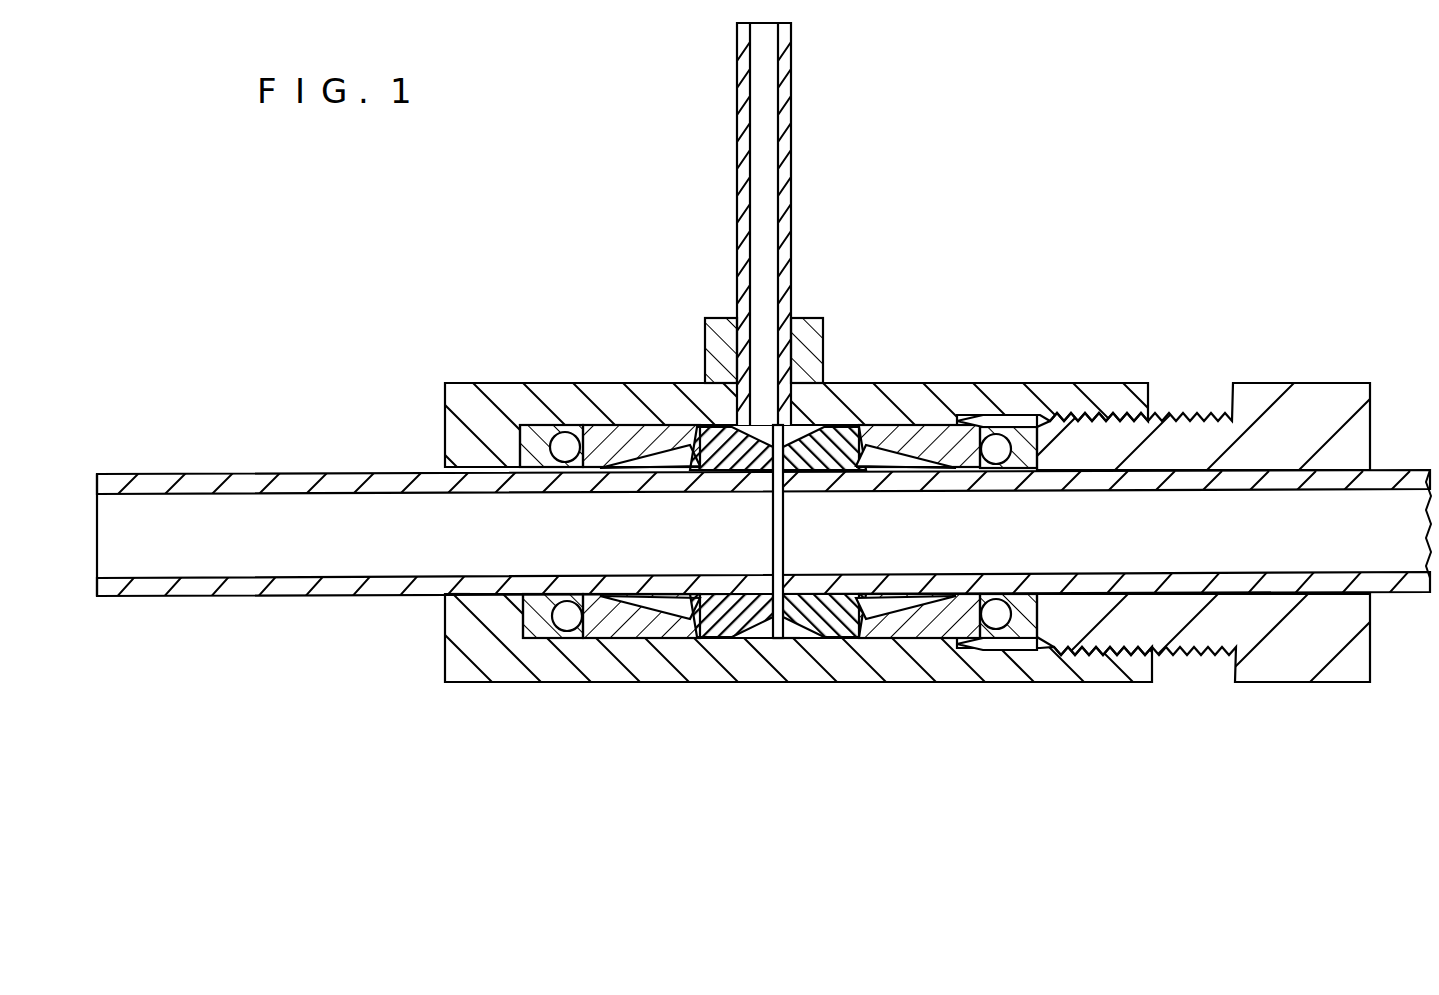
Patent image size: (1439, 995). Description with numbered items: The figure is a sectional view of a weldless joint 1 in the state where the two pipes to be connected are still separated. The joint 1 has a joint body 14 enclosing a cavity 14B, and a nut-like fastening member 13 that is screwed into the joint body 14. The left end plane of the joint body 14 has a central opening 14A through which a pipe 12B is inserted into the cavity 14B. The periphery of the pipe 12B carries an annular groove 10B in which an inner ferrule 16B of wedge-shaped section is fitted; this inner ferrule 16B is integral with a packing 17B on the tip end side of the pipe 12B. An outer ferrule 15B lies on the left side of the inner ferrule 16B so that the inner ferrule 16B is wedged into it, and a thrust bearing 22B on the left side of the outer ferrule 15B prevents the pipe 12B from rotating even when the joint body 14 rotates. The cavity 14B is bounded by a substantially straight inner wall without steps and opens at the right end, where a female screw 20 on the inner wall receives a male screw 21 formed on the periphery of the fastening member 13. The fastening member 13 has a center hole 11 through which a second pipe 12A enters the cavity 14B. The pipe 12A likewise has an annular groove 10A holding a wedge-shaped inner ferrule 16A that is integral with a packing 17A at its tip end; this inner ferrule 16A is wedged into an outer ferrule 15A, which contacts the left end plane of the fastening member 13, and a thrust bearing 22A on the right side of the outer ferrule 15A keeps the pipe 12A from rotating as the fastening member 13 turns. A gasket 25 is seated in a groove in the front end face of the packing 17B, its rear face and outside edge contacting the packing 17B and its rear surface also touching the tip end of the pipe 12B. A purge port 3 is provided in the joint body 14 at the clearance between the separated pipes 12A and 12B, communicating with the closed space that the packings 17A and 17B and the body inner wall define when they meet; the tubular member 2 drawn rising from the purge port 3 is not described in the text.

The weldless joint 1 is at (638, 312).
The lead tube 2 is at (792, 203).
The purge port 3 is at (800, 355).
The annular groove 10A is at (930, 458).
The annular groove 10B is at (618, 465).
The center hole 11 is at (753, 627).
The pipe 12A is at (1292, 587).
The pipe 12B is at (367, 585).
The fastening member 13 is at (1229, 502).
The joint body 14 is at (806, 603).
The opening 14A is at (457, 597).
The cavity 14B is at (793, 640).
The outer ferrule 15A is at (977, 640).
The outer ferrule 15B is at (607, 636).
The inner ferrule 16A is at (933, 603).
The inner ferrule 16B is at (657, 636).
The packing 17A is at (830, 636).
The packing 17B is at (747, 636).
The female screw 20 is at (1022, 416).
The male screw 21 is at (1186, 412).
The thrust bearing 22A is at (1018, 633).
The thrust bearing 22B is at (538, 636).
The gasket 25 is at (773, 586).